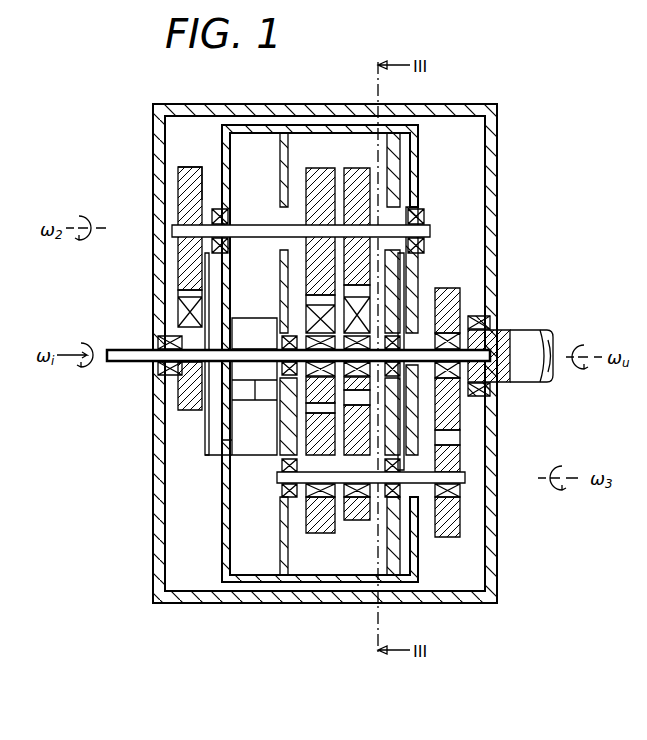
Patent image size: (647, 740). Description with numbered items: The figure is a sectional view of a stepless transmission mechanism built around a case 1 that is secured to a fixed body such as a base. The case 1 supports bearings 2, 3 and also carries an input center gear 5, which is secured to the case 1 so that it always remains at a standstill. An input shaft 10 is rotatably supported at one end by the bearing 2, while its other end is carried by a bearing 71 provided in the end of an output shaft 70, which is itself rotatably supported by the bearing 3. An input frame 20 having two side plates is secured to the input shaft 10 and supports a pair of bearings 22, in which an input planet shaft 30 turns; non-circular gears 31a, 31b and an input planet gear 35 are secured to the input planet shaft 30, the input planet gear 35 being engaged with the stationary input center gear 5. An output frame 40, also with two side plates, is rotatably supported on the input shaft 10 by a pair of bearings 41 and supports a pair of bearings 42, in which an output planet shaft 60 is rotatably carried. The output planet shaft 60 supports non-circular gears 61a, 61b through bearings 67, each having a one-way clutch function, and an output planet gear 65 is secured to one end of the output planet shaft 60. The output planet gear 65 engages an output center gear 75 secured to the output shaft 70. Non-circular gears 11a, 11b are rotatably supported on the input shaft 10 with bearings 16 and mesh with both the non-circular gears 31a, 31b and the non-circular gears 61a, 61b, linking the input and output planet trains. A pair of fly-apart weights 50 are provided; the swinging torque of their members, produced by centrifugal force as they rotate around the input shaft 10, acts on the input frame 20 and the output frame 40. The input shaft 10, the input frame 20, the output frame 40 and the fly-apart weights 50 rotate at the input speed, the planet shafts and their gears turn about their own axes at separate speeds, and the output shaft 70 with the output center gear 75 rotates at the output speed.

The case 1 is at (156, 110).
The bearing 2 is at (150, 350).
The bearing 3 is at (500, 330).
The input center gear 5 is at (180, 398).
The input shaft 10 is at (127, 362).
The non-circular gear 11a is at (340, 322).
The non-circular gear 11b is at (418, 272).
The bearings 16 is at (440, 305).
The input frame 20 is at (418, 128).
The bearings 22 is at (175, 234).
The input planet shaft 30 is at (180, 212).
The non-circular gear 31a is at (312, 168).
The non-circular gear 31b is at (355, 168).
The input planet gear 35 is at (180, 182).
The output frame 40 is at (414, 562).
The bearings 41 is at (268, 395).
The bearings 42 is at (282, 492).
The fly-apart weights 50 is at (240, 448).
The output planet shaft 60 is at (466, 478).
The non-circular gear 61a is at (302, 533).
The non-circular gear 61b is at (335, 520).
The output planet gear 65 is at (462, 522).
The bearings 67 is at (304, 530).
The output shaft 70 is at (525, 380).
The bearing 71 is at (522, 331).
The output center gear 75 is at (472, 316).